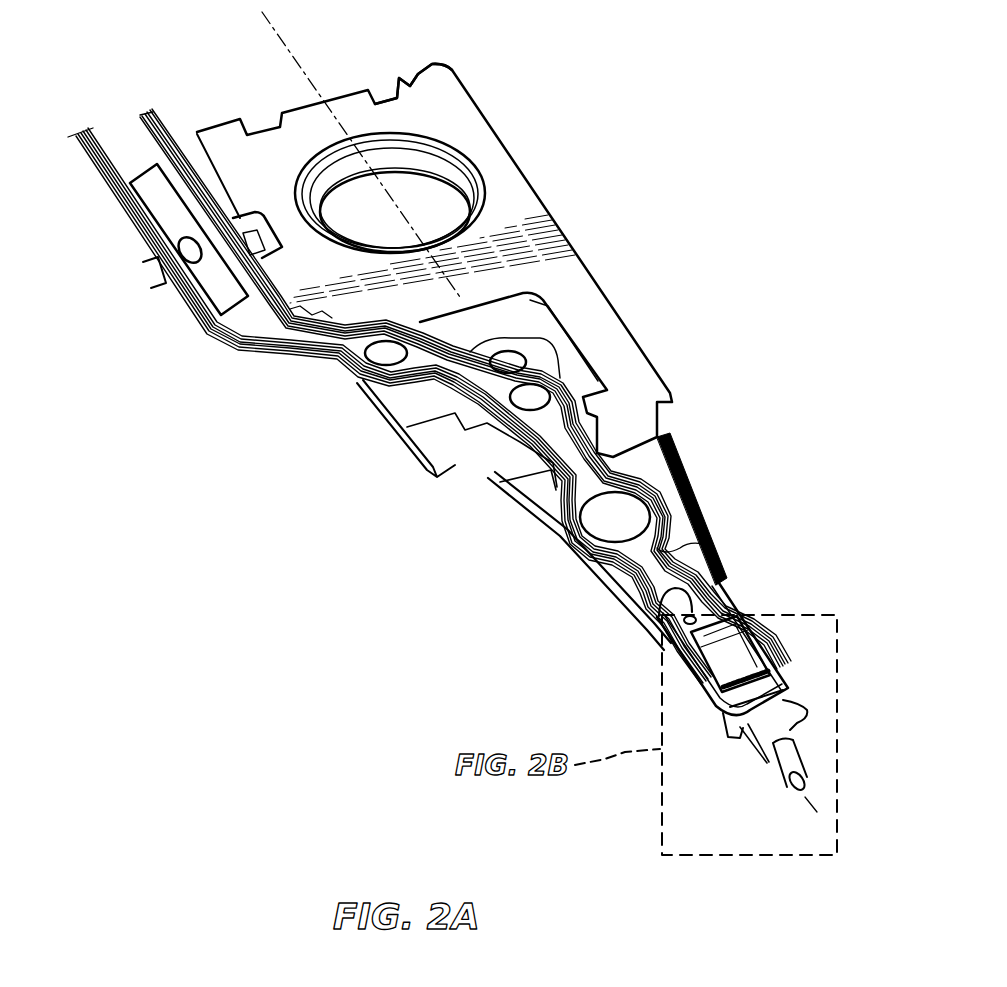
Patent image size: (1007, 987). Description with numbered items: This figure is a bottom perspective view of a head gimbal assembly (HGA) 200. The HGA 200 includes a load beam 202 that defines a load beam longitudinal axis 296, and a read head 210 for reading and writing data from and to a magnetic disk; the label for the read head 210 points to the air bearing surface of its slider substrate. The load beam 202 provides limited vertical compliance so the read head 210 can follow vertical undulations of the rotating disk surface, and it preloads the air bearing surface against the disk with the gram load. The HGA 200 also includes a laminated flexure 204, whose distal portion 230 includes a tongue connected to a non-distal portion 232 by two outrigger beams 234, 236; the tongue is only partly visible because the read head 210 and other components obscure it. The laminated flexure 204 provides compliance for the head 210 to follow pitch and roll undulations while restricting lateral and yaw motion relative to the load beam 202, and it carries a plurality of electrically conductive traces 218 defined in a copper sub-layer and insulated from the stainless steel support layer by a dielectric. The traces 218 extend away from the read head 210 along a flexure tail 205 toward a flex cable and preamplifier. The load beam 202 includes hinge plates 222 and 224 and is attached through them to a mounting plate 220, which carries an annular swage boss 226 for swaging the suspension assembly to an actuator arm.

The head gimbal assembly 200 is at (600, 217).
The load beam 202 is at (647, 463).
The laminated flexure 204 is at (708, 545).
The flexure tail 205 is at (117, 135).
The read head 210 is at (740, 642).
The electrically conductive traces 218 is at (387, 325).
The mounting plate 220 is at (423, 77).
The hinge plate 222 is at (490, 468).
The hinge plate 224 is at (630, 420).
The annular swage boss 226 is at (417, 173).
The distal portion of the laminated flexure 230 is at (752, 745).
The non-distal portion of the laminated flexure 232 is at (673, 447).
The outrigger beam 234 is at (655, 643).
The outrigger beam 236 is at (758, 628).
The load beam longitudinal axis 296 is at (825, 820).